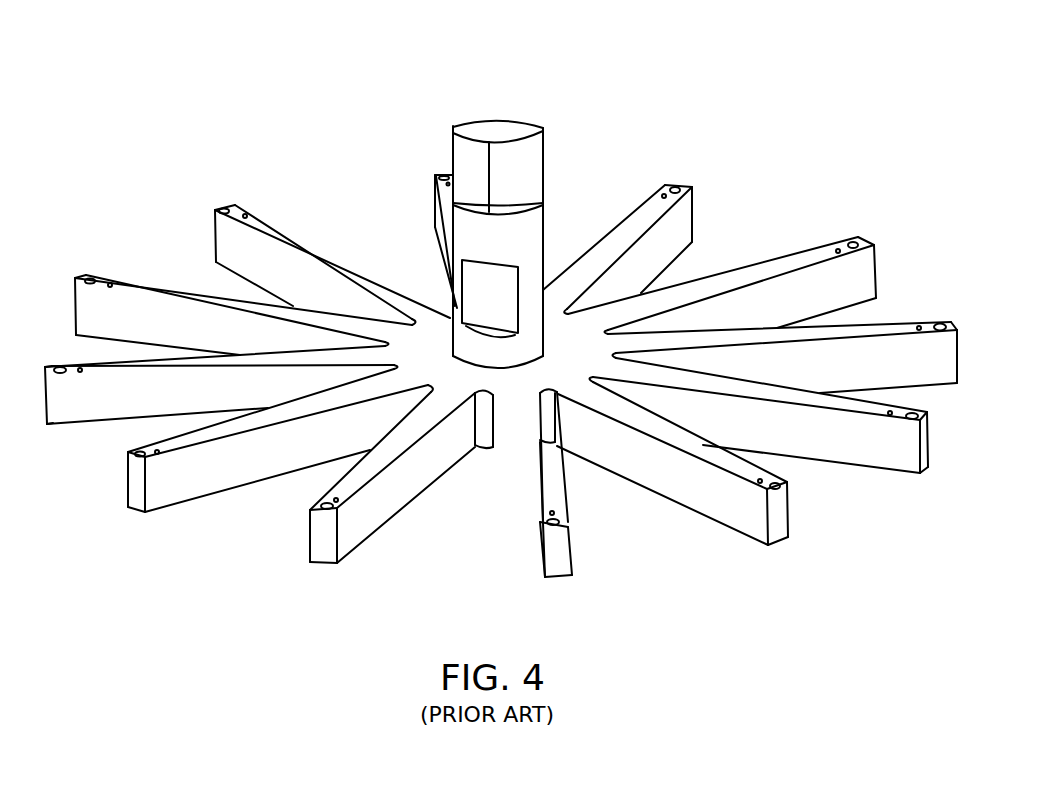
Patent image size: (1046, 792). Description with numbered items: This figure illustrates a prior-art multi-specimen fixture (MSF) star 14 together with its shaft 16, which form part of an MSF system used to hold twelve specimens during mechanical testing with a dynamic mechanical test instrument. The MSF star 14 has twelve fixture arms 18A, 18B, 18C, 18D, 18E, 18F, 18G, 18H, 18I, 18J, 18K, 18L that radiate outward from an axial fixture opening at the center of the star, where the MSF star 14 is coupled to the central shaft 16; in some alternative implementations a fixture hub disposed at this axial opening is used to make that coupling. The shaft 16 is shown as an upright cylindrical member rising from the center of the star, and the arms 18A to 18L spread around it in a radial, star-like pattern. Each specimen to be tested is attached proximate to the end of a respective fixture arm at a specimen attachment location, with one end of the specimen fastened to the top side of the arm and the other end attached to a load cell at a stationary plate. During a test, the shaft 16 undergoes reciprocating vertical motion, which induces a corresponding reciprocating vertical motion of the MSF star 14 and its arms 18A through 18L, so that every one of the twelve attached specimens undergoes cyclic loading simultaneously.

The MSF star 14 is at (501, 319).
The shaft 16 is at (533, 262).
The fixture arm 18A is at (893, 326).
The fixture arm 18B is at (870, 457).
The fixture arm 18C is at (778, 533).
The fixture arm 18D is at (560, 567).
The fixture arm 18E is at (362, 530).
The fixture arm 18F is at (182, 485).
The fixture arm 18G is at (88, 415).
The fixture arm 18H is at (136, 283).
The fixture arm 18I is at (284, 230).
The fixture arm 18J is at (435, 220).
The fixture arm 18K is at (630, 228).
The fixture arm 18L is at (796, 257).